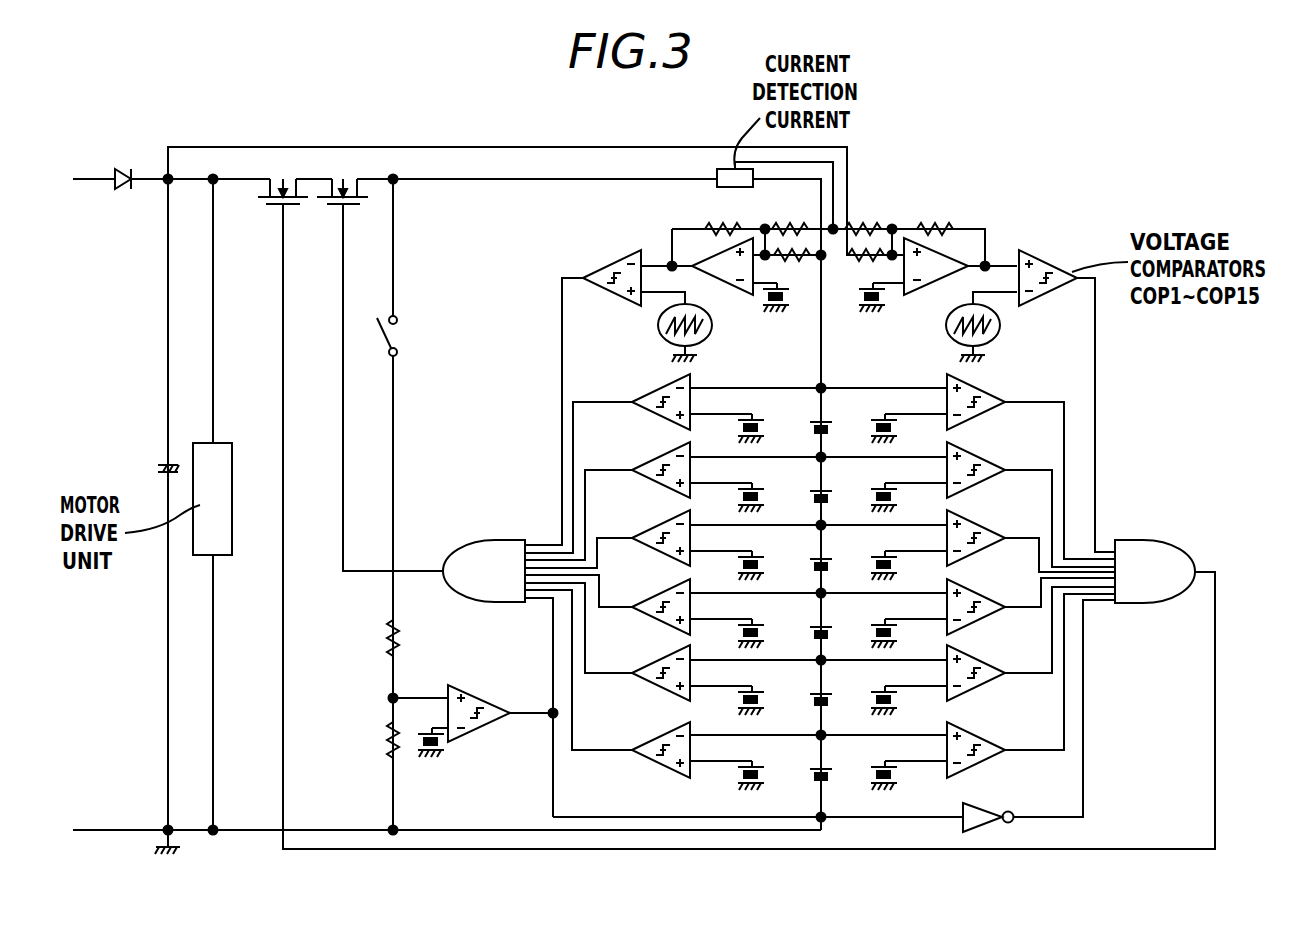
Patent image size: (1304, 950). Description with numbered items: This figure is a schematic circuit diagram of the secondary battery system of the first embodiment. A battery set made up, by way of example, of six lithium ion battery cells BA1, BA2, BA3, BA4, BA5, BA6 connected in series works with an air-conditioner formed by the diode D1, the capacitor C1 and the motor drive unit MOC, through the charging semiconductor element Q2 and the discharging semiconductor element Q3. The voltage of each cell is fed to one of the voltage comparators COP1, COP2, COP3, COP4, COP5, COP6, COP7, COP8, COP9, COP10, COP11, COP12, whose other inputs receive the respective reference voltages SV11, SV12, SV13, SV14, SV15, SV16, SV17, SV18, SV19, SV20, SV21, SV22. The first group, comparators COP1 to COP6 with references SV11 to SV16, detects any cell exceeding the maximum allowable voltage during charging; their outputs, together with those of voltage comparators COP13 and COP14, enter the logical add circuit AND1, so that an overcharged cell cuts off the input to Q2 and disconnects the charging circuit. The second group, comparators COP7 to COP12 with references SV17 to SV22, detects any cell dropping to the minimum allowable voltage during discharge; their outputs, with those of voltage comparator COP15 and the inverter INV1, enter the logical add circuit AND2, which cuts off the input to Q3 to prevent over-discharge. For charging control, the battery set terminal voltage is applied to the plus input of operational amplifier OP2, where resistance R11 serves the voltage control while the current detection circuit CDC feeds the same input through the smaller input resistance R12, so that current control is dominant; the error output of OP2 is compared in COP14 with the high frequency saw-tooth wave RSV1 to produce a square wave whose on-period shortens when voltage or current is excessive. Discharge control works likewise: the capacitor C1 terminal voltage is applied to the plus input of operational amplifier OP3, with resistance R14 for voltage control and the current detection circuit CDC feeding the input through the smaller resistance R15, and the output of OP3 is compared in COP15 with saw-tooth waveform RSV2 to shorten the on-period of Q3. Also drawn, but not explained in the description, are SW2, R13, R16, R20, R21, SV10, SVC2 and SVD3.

The diode D1 is at (121, 190).
The discharging semiconductor element Q3 is at (290, 185).
The charging semiconductor element Q2 is at (347, 185).
The switch SW2 is at (400, 336).
The capacitor C1 is at (159, 468).
The motor drive unit MOC is at (224, 560).
The resistor R20 is at (386, 636).
The resistor R21 is at (386, 738).
The logical add circuit AND1 is at (466, 591).
The voltage comparator COP13 is at (486, 682).
The switch SV10 is at (438, 745).
The current detection circuit CDC is at (716, 176).
The resistor R13 is at (717, 233).
The input resistance R12 is at (784, 233).
The input resistance R15 is at (871, 231).
The resistor R16 is at (946, 231).
The resistance for voltage control R11 is at (795, 262).
The resistance for voltage control R14 is at (858, 262).
The operational amplifier OP2 is at (733, 300).
The operational amplifier OP3 is at (920, 298).
The switch SVC2 is at (790, 305).
The switch SVD3 is at (890, 305).
The voltage comparator COP14 is at (604, 265).
The voltage comparator COP15 is at (1064, 266).
The high frequency saw-tooth wave RSV1 is at (658, 326).
The high frequency saw-tooth waveform RSV2 is at (1002, 328).
The voltage comparator COP1 is at (650, 412).
The voltage comparator COP2 is at (650, 480).
The voltage comparator COP3 is at (650, 548).
The voltage comparator COP4 is at (650, 617).
The voltage comparator COP5 is at (650, 683).
The voltage comparator COP6 is at (650, 760).
The voltage comparator COP7 is at (985, 412).
The voltage comparator COP8 is at (985, 480).
The voltage comparator COP9 is at (980, 548).
The voltage comparator COP10 is at (985, 617).
The voltage comparator COP11 is at (985, 683).
The voltage comparator COP12 is at (988, 760).
The reference voltage SV11 is at (772, 440).
The reference voltage SV12 is at (772, 509).
The reference voltage SV13 is at (772, 577).
The reference voltage SV14 is at (772, 645).
The reference voltage SV15 is at (772, 712).
The reference voltage SV16 is at (772, 787).
The reference voltage SV17 is at (872, 440).
The reference voltage SV18 is at (872, 509).
The reference voltage SV19 is at (872, 577).
The reference voltage SV20 is at (872, 645).
The reference voltage SV21 is at (872, 712).
The reference voltage SV22 is at (872, 787).
The battery cell BA1 is at (815, 420).
The battery cell BA2 is at (815, 489).
The battery cell BA3 is at (815, 557).
The battery cell BA4 is at (815, 625).
The battery cell BA5 is at (815, 692).
The battery cell BA6 is at (815, 767).
The logical add circuit AND2 is at (1140, 592).
The inverter INV1 is at (1000, 826).